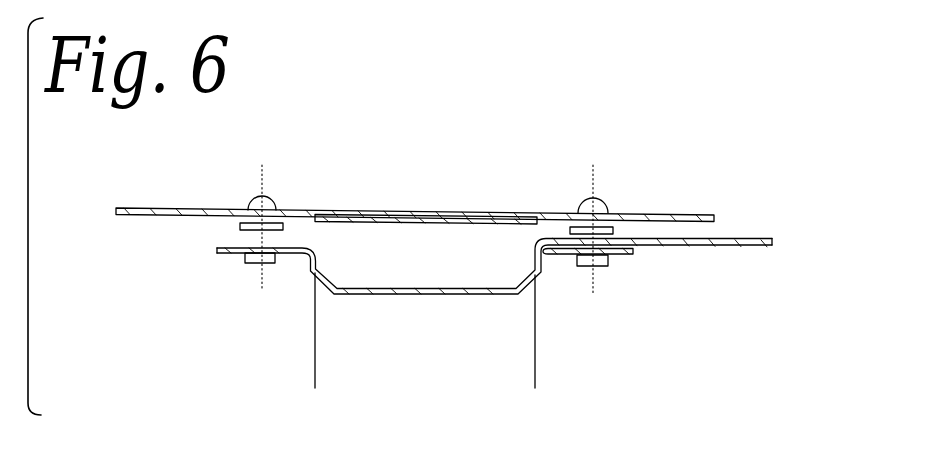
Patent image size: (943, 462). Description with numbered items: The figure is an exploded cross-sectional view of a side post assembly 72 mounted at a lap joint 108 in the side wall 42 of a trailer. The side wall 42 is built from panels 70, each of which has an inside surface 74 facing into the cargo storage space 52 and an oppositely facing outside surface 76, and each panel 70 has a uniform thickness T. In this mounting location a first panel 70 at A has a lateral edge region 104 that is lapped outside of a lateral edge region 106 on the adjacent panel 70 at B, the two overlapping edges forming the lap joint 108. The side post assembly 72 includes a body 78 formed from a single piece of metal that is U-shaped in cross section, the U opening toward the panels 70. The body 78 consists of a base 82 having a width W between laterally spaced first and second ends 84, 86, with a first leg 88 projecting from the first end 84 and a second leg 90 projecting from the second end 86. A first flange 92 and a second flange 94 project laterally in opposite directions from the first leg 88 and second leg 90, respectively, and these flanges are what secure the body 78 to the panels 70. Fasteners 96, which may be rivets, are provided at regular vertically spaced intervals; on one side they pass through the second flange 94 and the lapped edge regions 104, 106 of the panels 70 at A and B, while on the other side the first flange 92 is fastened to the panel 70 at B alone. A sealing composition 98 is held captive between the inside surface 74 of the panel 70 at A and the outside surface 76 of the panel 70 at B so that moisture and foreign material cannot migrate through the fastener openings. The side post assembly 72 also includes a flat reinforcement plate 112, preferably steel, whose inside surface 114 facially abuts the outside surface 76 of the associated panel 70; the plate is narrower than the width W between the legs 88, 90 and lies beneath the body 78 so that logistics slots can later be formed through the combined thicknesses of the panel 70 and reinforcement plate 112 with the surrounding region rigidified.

The side wall 42 is at (201, 205).
The cargo storage space 52 is at (448, 118).
The panel 70 is at (557, 212).
The side post assembly 72 is at (372, 305).
The inside surface 74 is at (780, 232).
The outside surface 76 is at (143, 215).
The body 78 is at (541, 284).
The base 82 is at (472, 296).
The first end 84 is at (312, 272).
The second end 86 is at (541, 281).
The first leg 88 is at (314, 258).
The second leg 90 is at (537, 263).
The first flange 92 is at (298, 247).
The second flange 94 is at (613, 213).
The fastener 96 is at (269, 198).
The sealing composition 98 is at (561, 218).
The lateral edge region 104 is at (540, 278).
The lateral edge region 106 is at (715, 214).
The lap joint 108 is at (568, 212).
The reinforcement plate 112 is at (357, 210).
The inside surface 114 is at (388, 210).
The first panel location A is at (778, 238).
The adjacent panel location B is at (447, 201).
The width W is at (535, 370).
The thickness T is at (661, 163).